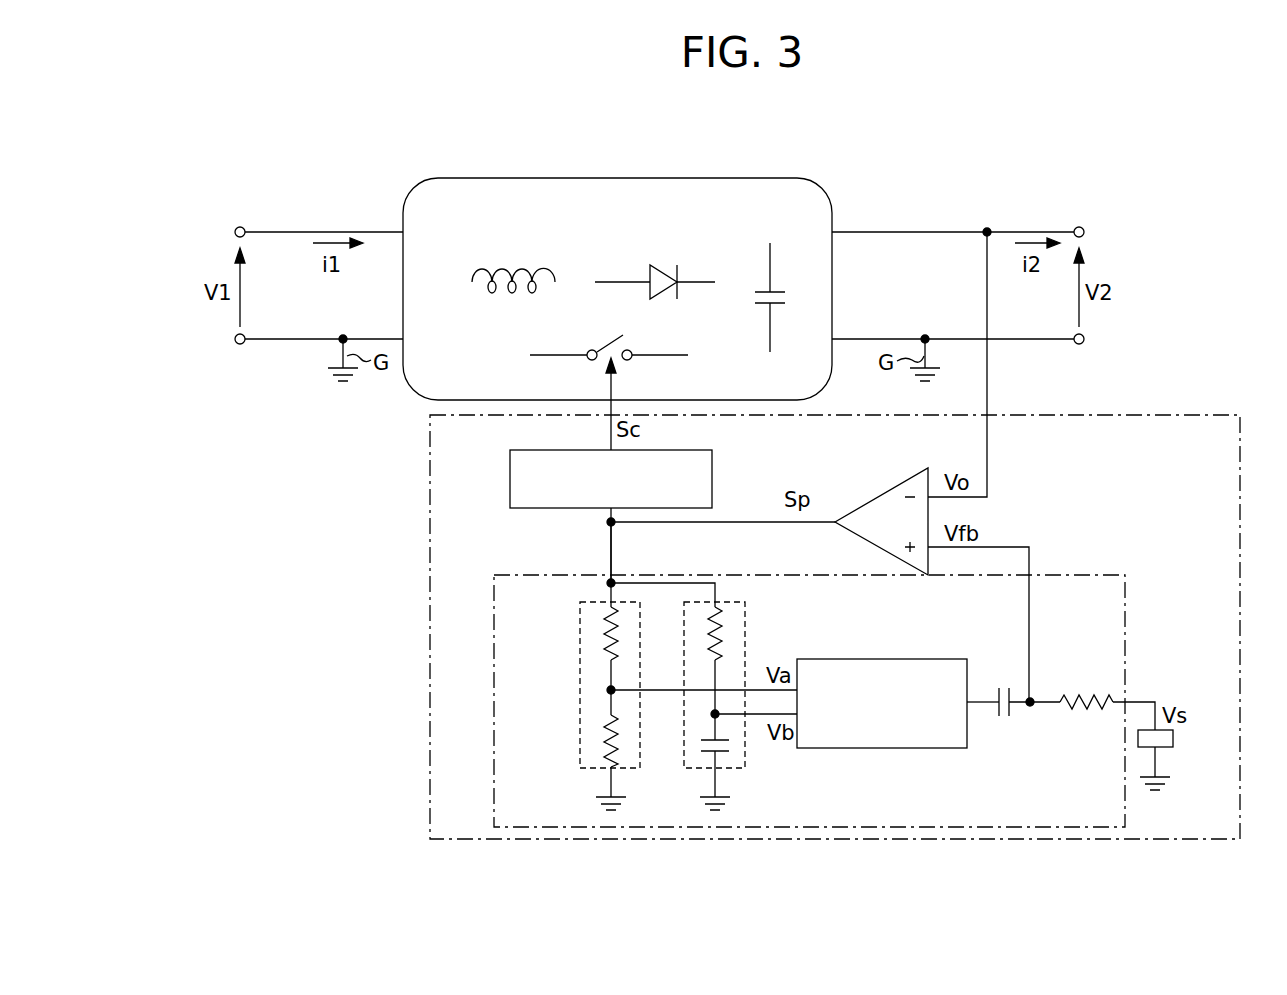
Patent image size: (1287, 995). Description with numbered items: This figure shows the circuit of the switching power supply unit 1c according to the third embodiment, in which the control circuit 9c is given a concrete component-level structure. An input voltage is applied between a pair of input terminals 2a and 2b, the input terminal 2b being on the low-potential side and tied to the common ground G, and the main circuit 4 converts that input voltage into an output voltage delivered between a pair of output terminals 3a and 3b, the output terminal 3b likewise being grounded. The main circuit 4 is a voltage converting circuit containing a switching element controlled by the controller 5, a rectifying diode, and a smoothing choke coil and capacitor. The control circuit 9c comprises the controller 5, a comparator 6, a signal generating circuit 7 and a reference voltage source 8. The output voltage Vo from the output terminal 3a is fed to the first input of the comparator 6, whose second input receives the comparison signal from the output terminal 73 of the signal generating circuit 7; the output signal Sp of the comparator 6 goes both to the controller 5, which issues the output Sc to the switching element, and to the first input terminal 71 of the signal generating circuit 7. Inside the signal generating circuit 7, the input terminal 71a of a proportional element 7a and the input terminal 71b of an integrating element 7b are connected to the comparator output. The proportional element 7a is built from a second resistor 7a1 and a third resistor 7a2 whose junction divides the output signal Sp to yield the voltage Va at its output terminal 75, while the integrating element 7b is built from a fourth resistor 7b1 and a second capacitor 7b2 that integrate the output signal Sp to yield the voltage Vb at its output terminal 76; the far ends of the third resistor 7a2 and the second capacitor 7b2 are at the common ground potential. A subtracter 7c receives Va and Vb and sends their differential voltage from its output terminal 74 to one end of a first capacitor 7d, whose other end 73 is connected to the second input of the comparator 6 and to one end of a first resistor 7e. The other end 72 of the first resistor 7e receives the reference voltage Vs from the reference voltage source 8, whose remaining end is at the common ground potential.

The power supply device 1c is at (766, 106).
The input terminal 2a is at (244, 228).
The input terminal 2b is at (244, 344).
The output terminal 3a is at (1083, 228).
The output terminal 3b is at (1083, 344).
The main circuit 4 is at (703, 178).
The controller 5 is at (510, 478).
The comparator 6 is at (893, 483).
The signal generating circuit 7 is at (1113, 573).
The control unit 9c is at (430, 677).
The first input terminal 71 is at (611, 547).
The input terminal 71a is at (608, 588).
The input terminal 71b is at (718, 590).
The proportional element 7a is at (580, 756).
The second resistor 7a1 is at (604, 630).
The third resistor 7a2 is at (604, 734).
The integrating element 7b is at (747, 762).
The fourth resistor 7b1 is at (727, 634).
The second capacitor 7b2 is at (686, 748).
The subtracter 7c is at (882, 748).
The first capacitor 7d is at (1002, 718).
The first resistor 7e is at (1075, 710).
The second input terminal 72 is at (1138, 700).
The output terminal 73 is at (1031, 549).
The output terminal 74 is at (982, 700).
The output terminal 75 is at (662, 690).
The output terminal 76 is at (750, 718).
The reference voltage source 8 is at (1173, 738).